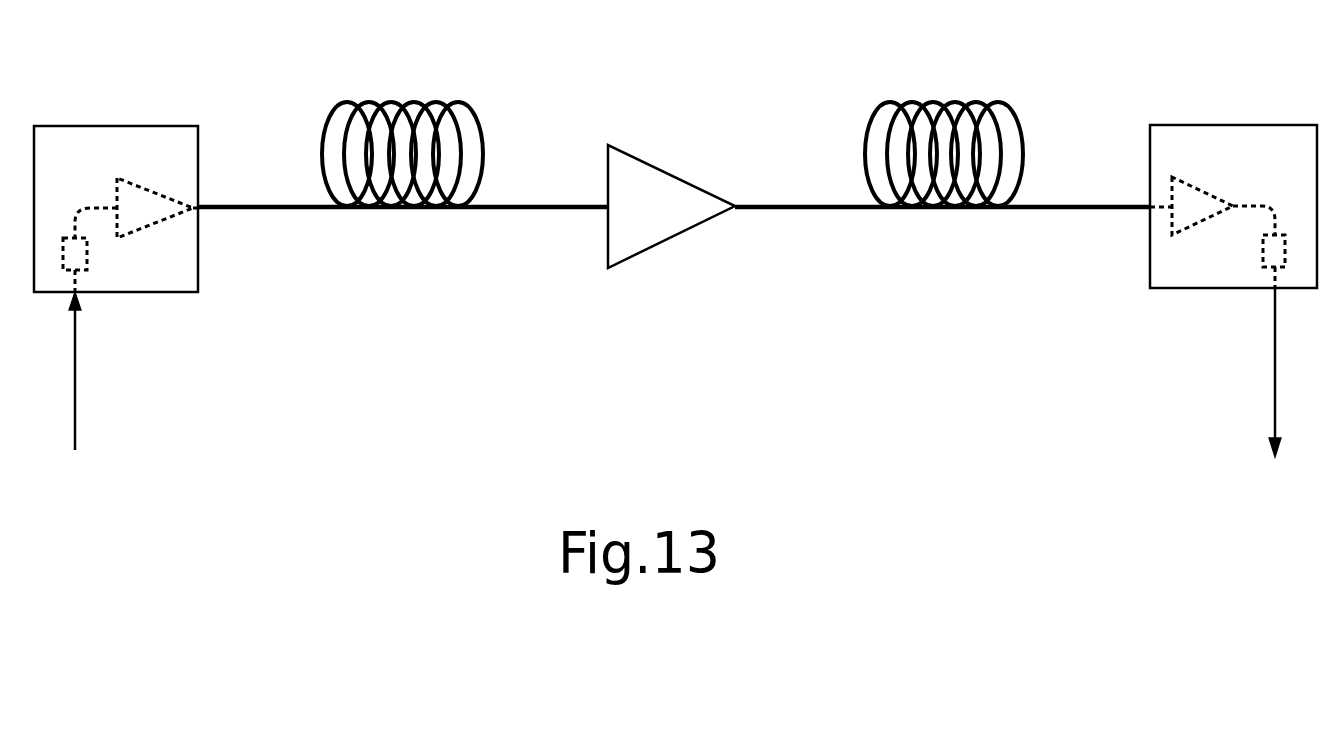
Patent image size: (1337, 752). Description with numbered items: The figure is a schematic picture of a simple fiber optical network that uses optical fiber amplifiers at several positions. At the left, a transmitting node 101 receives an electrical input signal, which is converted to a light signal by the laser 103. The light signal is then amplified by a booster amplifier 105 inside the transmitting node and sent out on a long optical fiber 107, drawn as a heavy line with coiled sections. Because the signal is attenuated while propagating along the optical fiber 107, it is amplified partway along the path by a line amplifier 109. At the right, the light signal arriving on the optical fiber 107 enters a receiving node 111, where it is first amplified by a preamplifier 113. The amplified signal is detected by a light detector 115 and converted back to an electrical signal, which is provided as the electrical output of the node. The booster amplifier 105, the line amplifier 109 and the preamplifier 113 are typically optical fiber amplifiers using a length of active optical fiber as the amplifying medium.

The transmitting node 101 is at (185, 145).
The laser 103 is at (77, 265).
The booster amplifier 105 is at (153, 213).
The optical fiber 107 is at (550, 208).
The line amplifier 109 is at (648, 240).
The receiving node 111 is at (1175, 133).
The preamplifier 113 is at (1188, 228).
The light detector 115 is at (1270, 262).